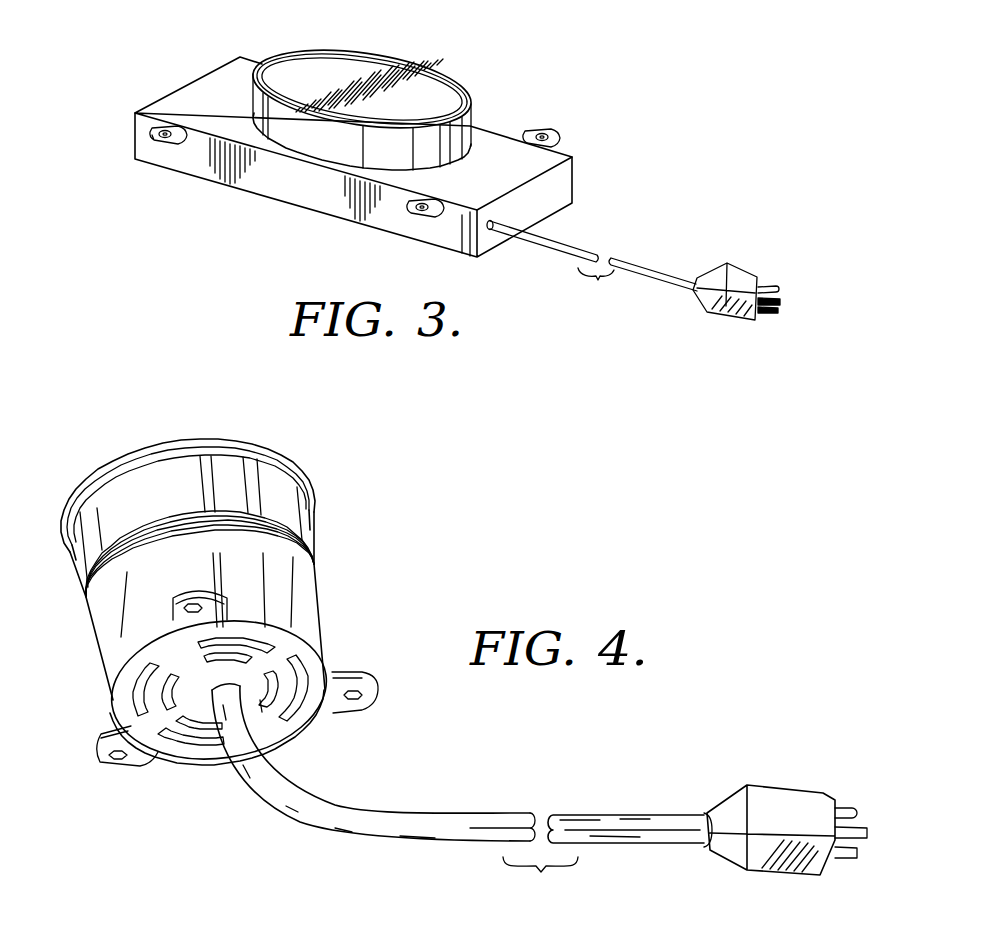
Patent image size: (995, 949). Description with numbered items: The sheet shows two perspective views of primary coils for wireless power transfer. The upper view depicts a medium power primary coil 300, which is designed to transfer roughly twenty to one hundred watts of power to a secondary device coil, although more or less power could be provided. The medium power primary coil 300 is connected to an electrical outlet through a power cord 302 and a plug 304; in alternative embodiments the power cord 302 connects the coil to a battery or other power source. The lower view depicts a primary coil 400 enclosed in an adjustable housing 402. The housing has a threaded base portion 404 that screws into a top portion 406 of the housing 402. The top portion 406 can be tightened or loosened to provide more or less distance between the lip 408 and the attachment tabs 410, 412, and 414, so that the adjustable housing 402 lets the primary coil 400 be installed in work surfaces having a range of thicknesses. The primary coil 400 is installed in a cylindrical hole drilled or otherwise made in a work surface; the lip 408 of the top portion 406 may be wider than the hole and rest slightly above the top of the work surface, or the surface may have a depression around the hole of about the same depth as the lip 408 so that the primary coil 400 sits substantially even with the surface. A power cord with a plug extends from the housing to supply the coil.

In FIG. 3, the medium power primary coil 300 is at (463, 83).
In FIG. 3, the power cord 302 is at (571, 243).
In FIG. 3, the plug 304 is at (747, 270).
In FIG. 4, the primary coil 400 is at (452, 640).
In FIG. 4, the adjustable housing 402 is at (303, 532).
In FIG. 4, the base portion 404 is at (92, 618).
In FIG. 4, the top portion 406 is at (152, 478).
In FIG. 4, the lip 408 is at (264, 447).
In FIG. 4, the attachment tab 410 is at (118, 775).
In FIG. 4, the attachment tab 412 is at (167, 622).
In FIG. 4, the attachment tab 414 is at (355, 673).